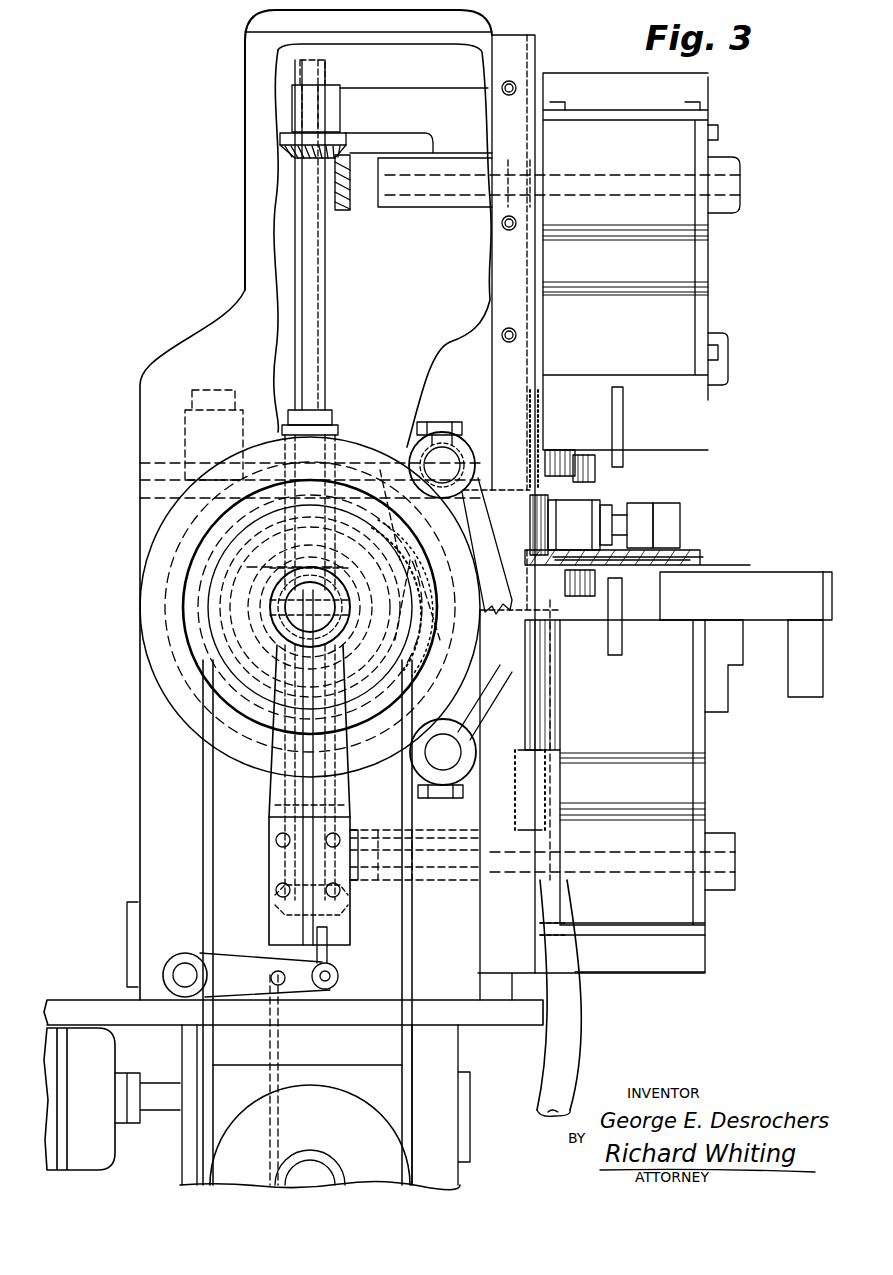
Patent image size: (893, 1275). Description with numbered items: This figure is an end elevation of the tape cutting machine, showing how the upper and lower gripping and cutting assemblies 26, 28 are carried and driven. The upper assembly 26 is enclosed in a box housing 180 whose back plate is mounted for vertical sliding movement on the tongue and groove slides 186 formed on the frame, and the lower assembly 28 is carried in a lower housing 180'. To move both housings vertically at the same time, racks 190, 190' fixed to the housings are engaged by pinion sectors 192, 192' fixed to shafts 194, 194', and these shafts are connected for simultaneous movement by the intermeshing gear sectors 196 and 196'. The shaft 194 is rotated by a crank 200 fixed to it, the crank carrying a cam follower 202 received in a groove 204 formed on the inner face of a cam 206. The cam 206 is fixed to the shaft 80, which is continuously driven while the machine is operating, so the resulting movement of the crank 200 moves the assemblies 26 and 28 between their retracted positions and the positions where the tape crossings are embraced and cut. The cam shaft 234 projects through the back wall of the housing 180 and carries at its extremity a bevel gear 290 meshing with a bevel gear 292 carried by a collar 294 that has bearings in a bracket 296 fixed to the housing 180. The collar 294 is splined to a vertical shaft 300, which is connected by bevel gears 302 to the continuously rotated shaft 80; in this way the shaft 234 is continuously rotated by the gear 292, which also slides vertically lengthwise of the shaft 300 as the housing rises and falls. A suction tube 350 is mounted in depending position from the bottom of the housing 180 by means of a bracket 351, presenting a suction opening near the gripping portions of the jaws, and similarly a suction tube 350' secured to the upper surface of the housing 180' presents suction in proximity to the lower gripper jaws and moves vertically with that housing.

The upper gripping and cutting assembly 26 is at (724, 116).
The lower gripping and cutting assembly 28 is at (716, 790).
The shaft 80 is at (284, 610).
The box housing 180 is at (661, 261).
The lower housing 180' is at (637, 796).
The tongue and groove slides 186 is at (520, 52).
The rack 190 is at (490, 430).
The rack 190' is at (567, 790).
The pinion sector 192 is at (448, 418).
The pinion sector 192' is at (516, 759).
The shaft 194 is at (407, 436).
The shaft 194' is at (510, 732).
The gear sector 196 is at (496, 546).
The gear sector 196' is at (534, 685).
The crank 200 is at (478, 490).
The cam follower 202 is at (565, 600).
The cam groove 204 is at (158, 650).
The cam 206 is at (160, 552).
The cam shaft 234 is at (428, 207).
The bevel gear 290 is at (343, 212).
The bevel gear 292 is at (283, 150).
The collar 294 is at (335, 85).
The bracket 296 is at (425, 88).
The vertical shaft 300 is at (325, 297).
The bevel gears 302 is at (290, 568).
The suction tube 350 is at (626, 473).
The suction tube 350' is at (610, 575).
The bracket 351 is at (573, 478).